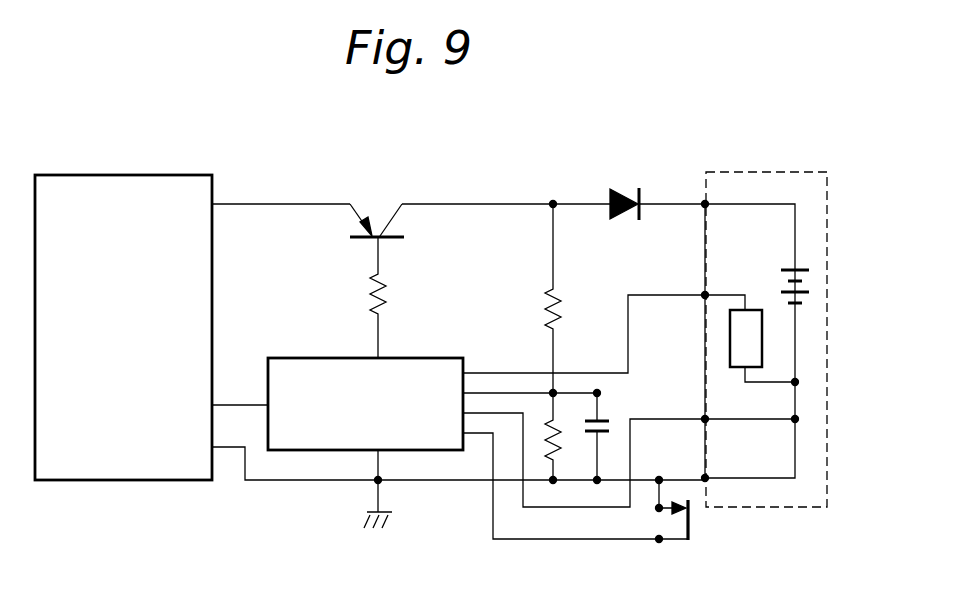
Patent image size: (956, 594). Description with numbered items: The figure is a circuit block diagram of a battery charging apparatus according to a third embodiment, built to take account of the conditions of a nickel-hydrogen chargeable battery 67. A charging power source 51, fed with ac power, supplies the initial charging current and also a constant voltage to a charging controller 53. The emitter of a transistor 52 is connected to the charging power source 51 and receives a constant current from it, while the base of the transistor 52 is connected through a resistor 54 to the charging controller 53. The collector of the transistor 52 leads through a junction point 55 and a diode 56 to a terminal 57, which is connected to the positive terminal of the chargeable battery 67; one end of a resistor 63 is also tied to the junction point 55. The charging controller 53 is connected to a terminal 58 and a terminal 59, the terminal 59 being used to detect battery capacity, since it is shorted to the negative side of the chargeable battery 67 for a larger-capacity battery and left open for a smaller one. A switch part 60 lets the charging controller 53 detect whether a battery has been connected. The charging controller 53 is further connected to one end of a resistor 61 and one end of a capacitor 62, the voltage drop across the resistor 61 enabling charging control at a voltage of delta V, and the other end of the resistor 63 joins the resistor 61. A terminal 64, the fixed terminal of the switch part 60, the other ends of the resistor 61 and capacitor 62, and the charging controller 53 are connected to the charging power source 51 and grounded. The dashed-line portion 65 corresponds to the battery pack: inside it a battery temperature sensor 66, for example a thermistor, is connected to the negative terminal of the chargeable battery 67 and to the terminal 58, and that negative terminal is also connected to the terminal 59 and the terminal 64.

The charging power source 51 is at (214, 182).
The transistor 52 is at (375, 224).
The charging controller 53 is at (406, 358).
The resistor 54 is at (367, 300).
The junction point 55 is at (553, 192).
The diode 56 is at (622, 192).
The terminal 57 is at (705, 200).
The terminal 58 is at (705, 293).
The terminal 59 is at (705, 416).
The switch part 60 is at (698, 515).
The resistor 61 is at (557, 441).
The capacitor 62 is at (605, 422).
The resistor 63 is at (547, 312).
The terminal 64 is at (708, 479).
The portion shown with dashed lines 65 is at (776, 172).
The battery temperature sensor 66 is at (757, 308).
The chargeable battery 67 is at (808, 290).